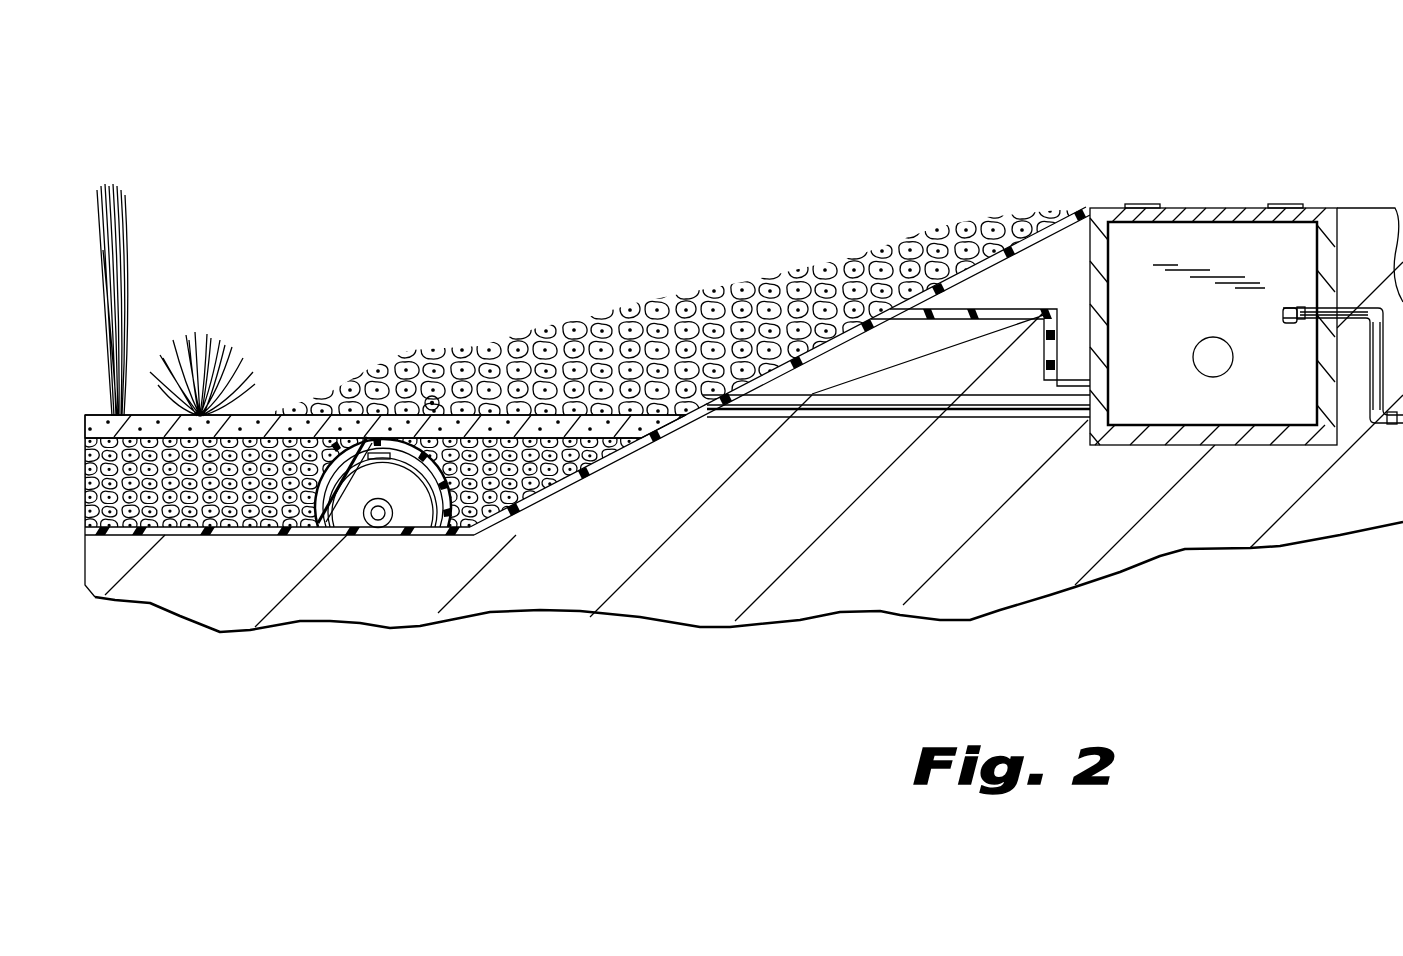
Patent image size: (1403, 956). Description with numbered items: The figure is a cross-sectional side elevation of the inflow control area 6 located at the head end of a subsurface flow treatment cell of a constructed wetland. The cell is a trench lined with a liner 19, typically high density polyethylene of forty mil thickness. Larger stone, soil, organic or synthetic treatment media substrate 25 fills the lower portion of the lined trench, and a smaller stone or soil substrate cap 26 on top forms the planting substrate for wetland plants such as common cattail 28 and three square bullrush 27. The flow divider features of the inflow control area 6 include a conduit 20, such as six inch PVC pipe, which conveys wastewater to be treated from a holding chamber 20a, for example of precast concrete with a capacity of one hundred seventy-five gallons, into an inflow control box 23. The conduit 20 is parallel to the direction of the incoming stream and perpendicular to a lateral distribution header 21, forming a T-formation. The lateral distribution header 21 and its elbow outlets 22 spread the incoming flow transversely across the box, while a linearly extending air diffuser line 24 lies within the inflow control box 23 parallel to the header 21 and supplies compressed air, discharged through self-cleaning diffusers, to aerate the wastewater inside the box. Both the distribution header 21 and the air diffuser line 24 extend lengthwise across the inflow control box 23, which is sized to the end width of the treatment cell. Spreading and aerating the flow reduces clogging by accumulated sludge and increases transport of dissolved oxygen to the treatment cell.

The inflow control area 6 is at (744, 382).
The liner 19 is at (1062, 212).
The conduit 20 is at (848, 408).
The holding chamber 20a is at (1332, 243).
The lateral distribution header 21 is at (433, 396).
The elbow outlets 22 is at (377, 437).
The inflow control box 23 is at (339, 537).
The air diffuser line 24 is at (383, 530).
The treatment media substrate 25 is at (518, 467).
The substrate cap 26 is at (293, 427).
The three square bullrush 27 is at (183, 318).
The common cattail 28 is at (135, 230).